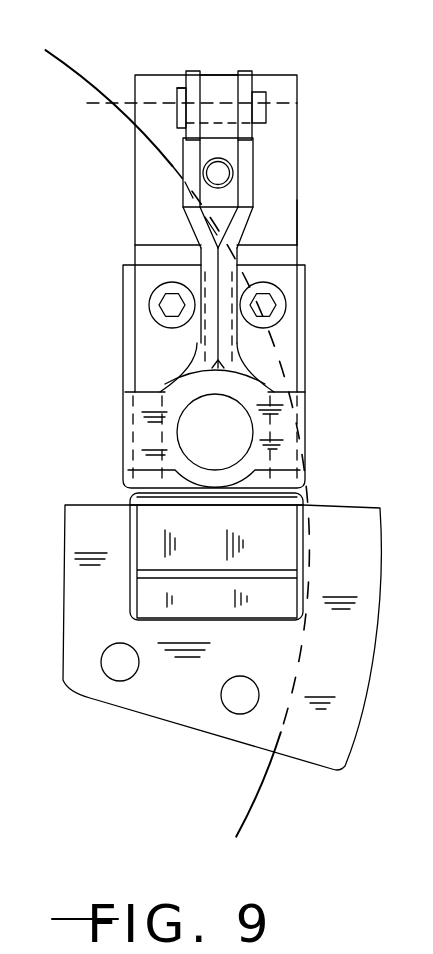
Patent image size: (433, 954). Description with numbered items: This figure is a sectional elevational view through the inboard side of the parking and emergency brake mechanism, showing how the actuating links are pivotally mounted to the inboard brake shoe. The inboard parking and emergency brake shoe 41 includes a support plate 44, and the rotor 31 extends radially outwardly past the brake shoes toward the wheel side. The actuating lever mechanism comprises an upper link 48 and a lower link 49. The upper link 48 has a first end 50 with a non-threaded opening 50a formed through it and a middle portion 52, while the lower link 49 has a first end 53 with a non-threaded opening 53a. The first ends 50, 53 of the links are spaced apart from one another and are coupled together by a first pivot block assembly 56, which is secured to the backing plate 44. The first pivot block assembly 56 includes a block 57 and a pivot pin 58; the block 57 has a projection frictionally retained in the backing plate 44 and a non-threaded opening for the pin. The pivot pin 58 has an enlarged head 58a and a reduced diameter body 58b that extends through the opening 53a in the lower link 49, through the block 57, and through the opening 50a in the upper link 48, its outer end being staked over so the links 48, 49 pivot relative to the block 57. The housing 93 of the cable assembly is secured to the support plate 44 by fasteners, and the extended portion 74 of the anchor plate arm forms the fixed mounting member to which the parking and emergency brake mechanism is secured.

The rotor 31 is at (266, 783).
The extended portion (mounting member) 74 is at (347, 713).
The housing 93 is at (308, 414).
The middle portion 52 is at (228, 342).
The support plate 44 is at (283, 188).
The inboard parking and emergency brake shoe 41 is at (300, 223).
The lower link 49 is at (185, 227).
The upper link 48 is at (258, 230).
The block 57 is at (228, 133).
The first end 53 is at (186, 78).
The first end 50 is at (253, 85).
The first pivot block assembly 56 is at (219, 80).
The non-threaded opening 50a is at (273, 107).
The reduced diameter body 58b is at (266, 113).
The non-threaded opening 53a is at (158, 107).
The pivot pin 58 is at (166, 137).
The enlarged head 58a is at (177, 115).